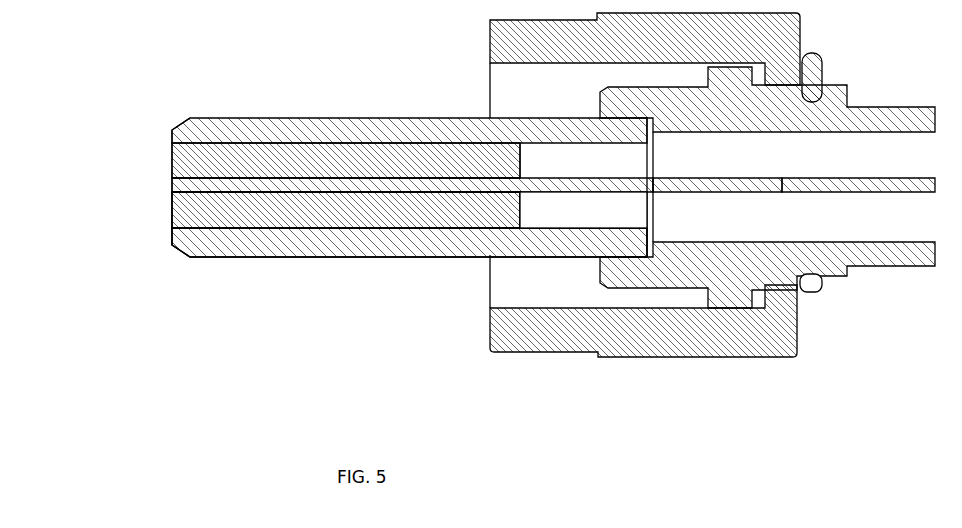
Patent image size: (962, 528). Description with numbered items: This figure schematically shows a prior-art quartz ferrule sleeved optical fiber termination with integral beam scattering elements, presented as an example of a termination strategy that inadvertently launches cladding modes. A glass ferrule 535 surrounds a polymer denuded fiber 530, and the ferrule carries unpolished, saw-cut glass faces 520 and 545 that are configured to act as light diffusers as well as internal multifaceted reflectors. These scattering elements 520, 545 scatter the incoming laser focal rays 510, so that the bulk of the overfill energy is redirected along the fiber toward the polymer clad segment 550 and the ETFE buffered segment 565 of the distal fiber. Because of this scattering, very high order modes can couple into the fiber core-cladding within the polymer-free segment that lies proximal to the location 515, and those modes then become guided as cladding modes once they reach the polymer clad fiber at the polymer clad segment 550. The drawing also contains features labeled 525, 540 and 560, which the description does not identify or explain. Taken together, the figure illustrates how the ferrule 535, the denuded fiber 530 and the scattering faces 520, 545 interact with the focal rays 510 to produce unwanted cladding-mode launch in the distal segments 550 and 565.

The laser focal rays 510 is at (770, 178).
The polymer-free segment end location 515 is at (583, 210).
The unpolished glass face 520 is at (172, 228).
The outer shield layer 525 is at (428, 235).
The polymer denuded fiber 530 is at (290, 190).
The glass ferrule 535 is at (315, 216).
The outer jacket 540 is at (353, 247).
The unpolished glass face 545 is at (517, 218).
The polymer clad segment 550 is at (690, 192).
The connector housing 560 is at (707, 340).
The ETFE buffered segment 565 is at (897, 192).